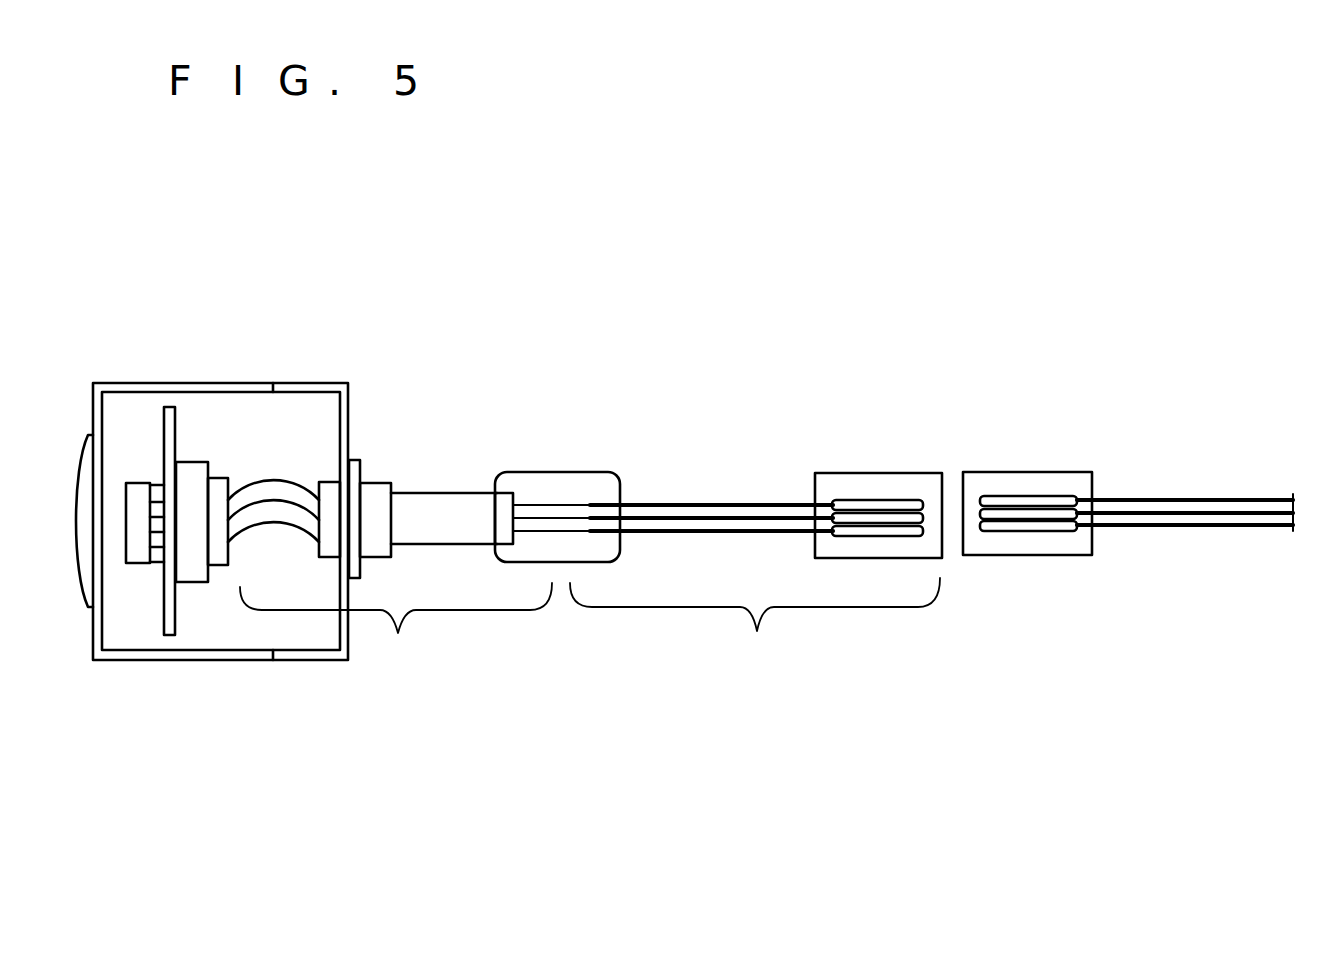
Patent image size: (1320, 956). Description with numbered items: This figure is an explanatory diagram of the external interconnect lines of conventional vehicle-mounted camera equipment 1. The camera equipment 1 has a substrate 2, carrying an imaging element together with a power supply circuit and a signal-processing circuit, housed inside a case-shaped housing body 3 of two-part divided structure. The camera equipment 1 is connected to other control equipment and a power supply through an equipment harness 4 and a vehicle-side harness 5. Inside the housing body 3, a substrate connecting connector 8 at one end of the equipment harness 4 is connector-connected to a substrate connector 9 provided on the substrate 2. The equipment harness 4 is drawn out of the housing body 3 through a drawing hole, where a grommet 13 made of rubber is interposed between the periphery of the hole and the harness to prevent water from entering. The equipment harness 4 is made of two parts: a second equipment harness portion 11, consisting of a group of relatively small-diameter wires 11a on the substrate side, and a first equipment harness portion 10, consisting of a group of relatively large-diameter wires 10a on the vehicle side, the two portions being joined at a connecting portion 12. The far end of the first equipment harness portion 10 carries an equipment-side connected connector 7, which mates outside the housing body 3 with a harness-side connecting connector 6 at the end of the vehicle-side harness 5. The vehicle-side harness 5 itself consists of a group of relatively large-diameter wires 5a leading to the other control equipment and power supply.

The vehicle-mounted camera equipment 1 is at (171, 323).
The substrate 2 is at (165, 618).
The housing body 3 is at (317, 660).
The equipment harness 4 is at (524, 412).
The vehicle-side harness 5 is at (1137, 402).
The wires 5a is at (1197, 497).
The harness-side connecting connector 6 is at (1033, 556).
The equipment-side connected connector 7 is at (875, 473).
The substrate connecting connector 8 is at (217, 472).
The substrate connector 9 is at (193, 574).
The first equipment harness portion 10 is at (727, 535).
The wires 10a is at (717, 530).
The second equipment harness portion 11 is at (430, 505).
The wires 11a is at (293, 522).
The connecting portion 12 is at (583, 473).
The grommet 13 is at (372, 483).